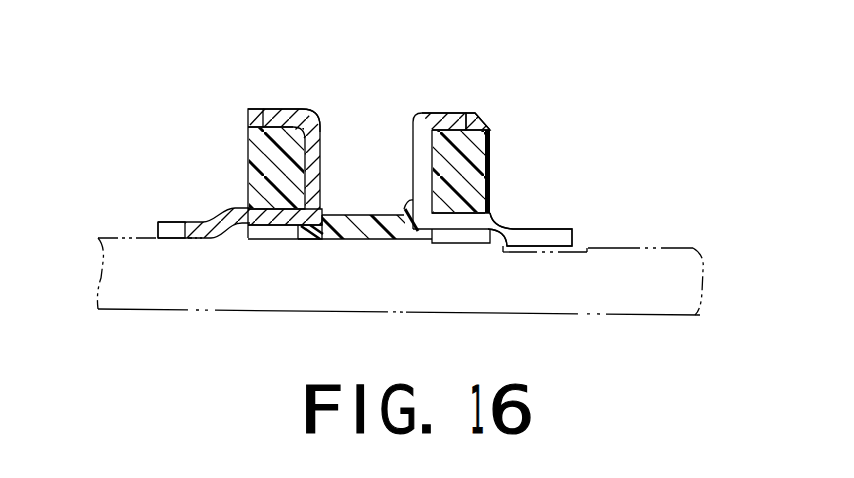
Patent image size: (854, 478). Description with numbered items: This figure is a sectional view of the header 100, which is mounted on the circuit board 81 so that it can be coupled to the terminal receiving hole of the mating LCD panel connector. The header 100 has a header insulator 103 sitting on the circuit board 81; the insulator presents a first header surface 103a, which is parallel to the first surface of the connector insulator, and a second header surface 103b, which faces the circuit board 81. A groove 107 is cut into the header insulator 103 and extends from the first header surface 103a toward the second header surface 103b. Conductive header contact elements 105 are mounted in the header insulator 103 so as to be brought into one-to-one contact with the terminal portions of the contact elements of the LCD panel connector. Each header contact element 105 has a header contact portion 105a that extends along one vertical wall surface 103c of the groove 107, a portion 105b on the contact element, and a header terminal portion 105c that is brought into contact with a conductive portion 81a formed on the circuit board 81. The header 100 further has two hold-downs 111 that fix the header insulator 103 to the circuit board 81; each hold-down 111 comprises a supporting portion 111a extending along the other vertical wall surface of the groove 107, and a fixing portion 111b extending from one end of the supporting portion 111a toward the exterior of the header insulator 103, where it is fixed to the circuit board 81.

The circuit board 81 is at (633, 293).
The conductive portions 81a is at (581, 247).
The header 100 is at (464, 258).
The header insulator 103 is at (490, 152).
The first header surface 103a is at (413, 112).
The second header surface 103b is at (392, 240).
The vertical wall surface 103c is at (414, 174).
The header contact elements 105 is at (442, 122).
The header contact portions 105a is at (410, 133).
The upper right portion of housing 105b is at (458, 115).
The header terminal portions 105c is at (540, 229).
The groove 107 is at (323, 240).
The hold-downs 111 is at (230, 208).
The supporting portion 111a is at (317, 175).
The fixing portion 111b is at (190, 239).